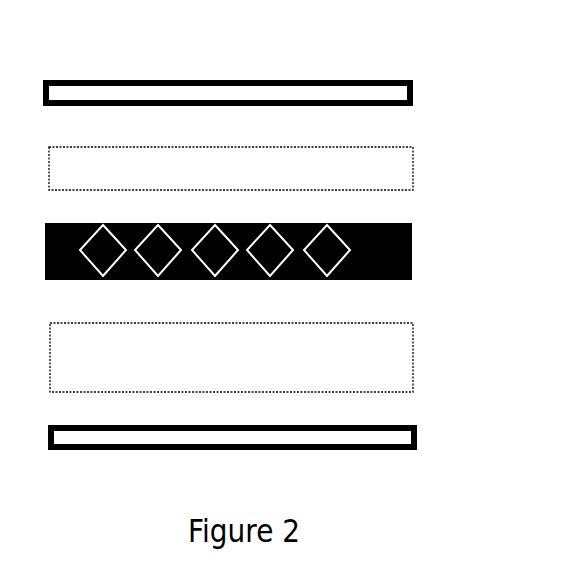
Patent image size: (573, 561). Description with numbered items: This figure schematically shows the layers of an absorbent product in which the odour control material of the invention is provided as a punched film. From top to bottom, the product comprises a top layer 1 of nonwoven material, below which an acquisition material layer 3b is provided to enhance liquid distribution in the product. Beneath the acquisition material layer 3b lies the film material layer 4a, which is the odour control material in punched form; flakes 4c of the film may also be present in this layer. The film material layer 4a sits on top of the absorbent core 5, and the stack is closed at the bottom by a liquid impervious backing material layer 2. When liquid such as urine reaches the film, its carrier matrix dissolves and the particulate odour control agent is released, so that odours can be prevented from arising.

The top layer 1 is at (413, 82).
The backing material layer 2 is at (417, 427).
The acquisition material layer 3b is at (413, 172).
The film material layer 4a is at (412, 230).
The flakes 4c is at (327, 281).
The absorbent core 5 is at (413, 374).